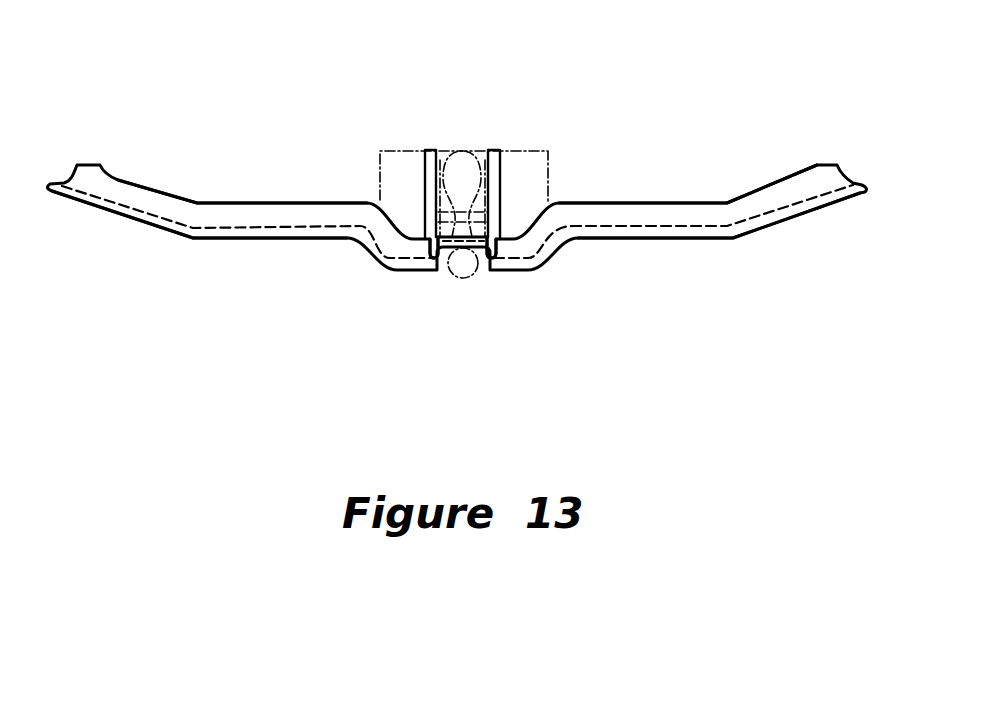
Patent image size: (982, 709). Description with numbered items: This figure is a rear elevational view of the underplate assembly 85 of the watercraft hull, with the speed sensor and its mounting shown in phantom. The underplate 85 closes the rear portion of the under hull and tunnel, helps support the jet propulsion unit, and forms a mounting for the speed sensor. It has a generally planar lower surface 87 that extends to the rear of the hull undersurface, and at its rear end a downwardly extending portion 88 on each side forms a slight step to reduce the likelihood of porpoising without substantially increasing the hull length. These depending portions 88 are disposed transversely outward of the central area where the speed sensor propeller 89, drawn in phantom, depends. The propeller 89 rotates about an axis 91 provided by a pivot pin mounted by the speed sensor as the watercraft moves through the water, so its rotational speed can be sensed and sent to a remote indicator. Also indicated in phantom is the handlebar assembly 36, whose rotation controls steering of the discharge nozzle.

The underplate assembly 85 is at (705, 151).
The lower surface 87 is at (279, 254).
The downwardly extending portion 88 is at (399, 287).
The propeller 89 is at (458, 290).
The handlebar assembly 36 is at (552, 140).
The axis 91 is at (480, 212).